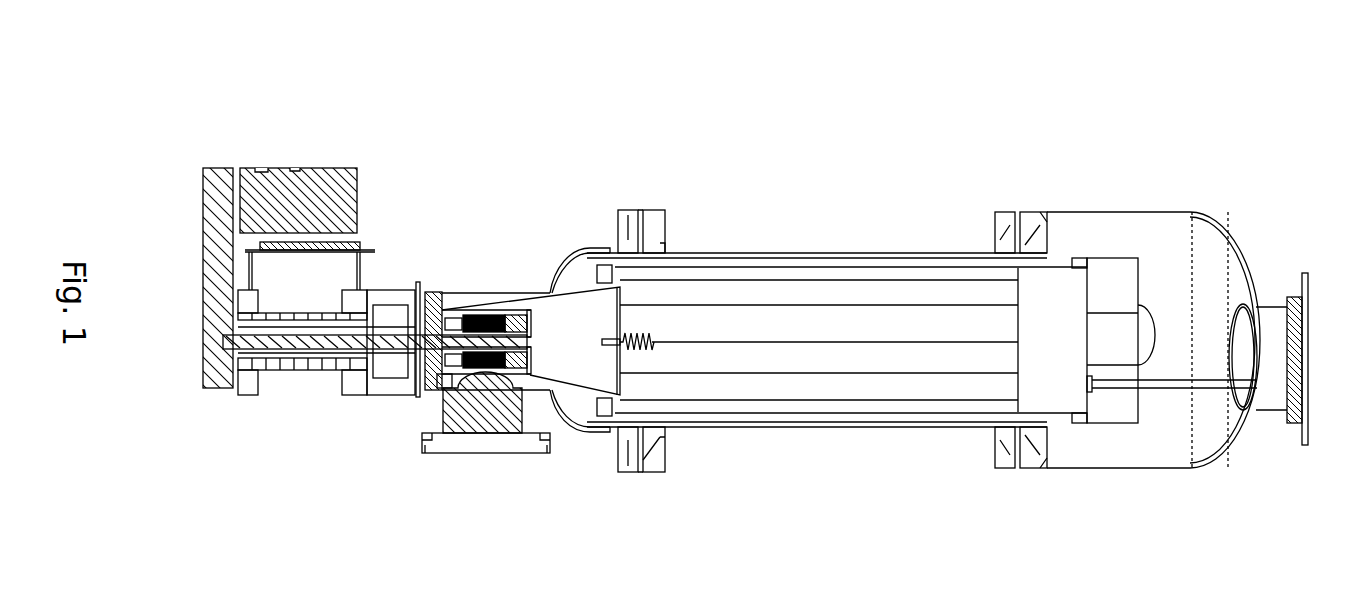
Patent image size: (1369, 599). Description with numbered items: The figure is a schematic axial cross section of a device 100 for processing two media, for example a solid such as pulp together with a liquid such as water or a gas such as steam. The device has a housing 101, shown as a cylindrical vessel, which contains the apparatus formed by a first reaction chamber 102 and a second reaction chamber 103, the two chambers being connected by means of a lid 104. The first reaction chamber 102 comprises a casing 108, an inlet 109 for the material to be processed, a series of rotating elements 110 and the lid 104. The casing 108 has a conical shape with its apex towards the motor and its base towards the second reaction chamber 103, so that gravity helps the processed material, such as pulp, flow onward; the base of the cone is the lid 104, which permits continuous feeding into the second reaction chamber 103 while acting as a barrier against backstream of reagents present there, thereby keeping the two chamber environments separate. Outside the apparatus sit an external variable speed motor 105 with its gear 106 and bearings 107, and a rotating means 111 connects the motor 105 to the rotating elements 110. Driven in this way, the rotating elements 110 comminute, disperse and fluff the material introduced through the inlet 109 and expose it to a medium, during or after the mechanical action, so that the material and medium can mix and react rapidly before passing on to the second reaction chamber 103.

The device 100 is at (1103, 125).
The housing 101 is at (943, 245).
The first reaction chamber 102 is at (552, 327).
The second reaction chamber 103 is at (800, 325).
The lid 104 is at (627, 323).
The variable speed motor 105 is at (325, 182).
The gear 106 is at (222, 376).
The bearings 107 is at (292, 352).
The casing 108 is at (478, 312).
The inlet 109 is at (490, 412).
The rotating elements 110 is at (450, 403).
The rotating means 111 is at (360, 341).